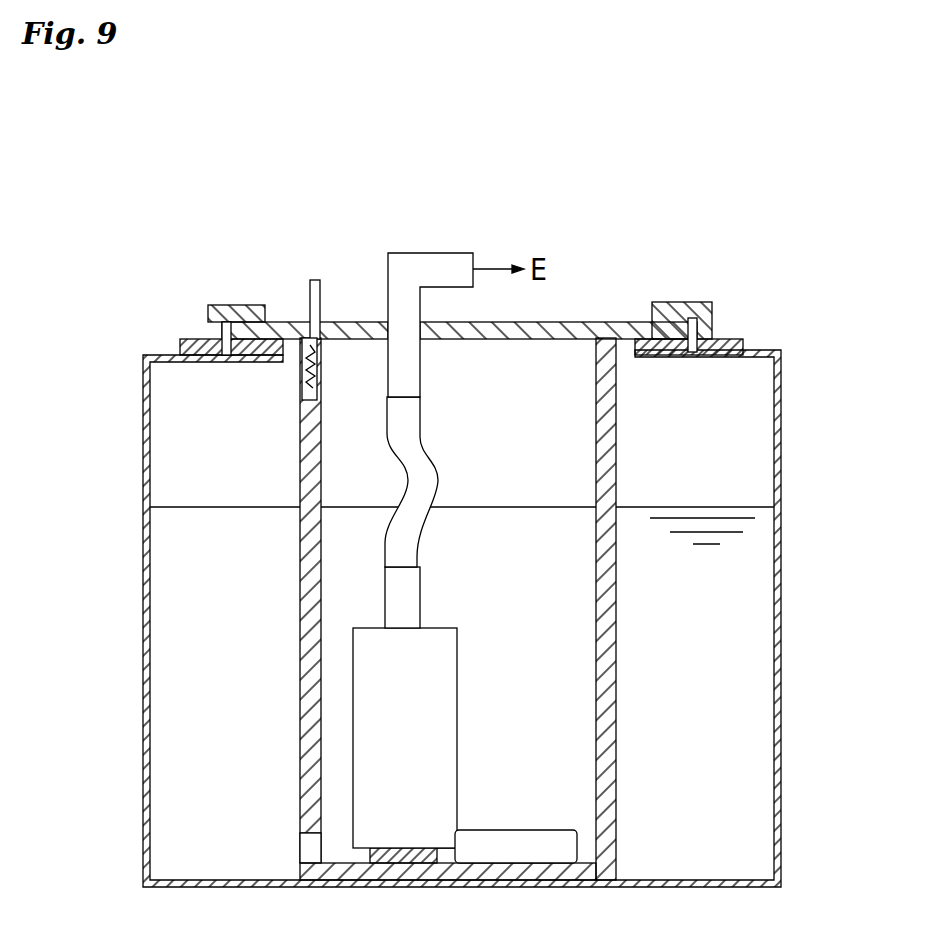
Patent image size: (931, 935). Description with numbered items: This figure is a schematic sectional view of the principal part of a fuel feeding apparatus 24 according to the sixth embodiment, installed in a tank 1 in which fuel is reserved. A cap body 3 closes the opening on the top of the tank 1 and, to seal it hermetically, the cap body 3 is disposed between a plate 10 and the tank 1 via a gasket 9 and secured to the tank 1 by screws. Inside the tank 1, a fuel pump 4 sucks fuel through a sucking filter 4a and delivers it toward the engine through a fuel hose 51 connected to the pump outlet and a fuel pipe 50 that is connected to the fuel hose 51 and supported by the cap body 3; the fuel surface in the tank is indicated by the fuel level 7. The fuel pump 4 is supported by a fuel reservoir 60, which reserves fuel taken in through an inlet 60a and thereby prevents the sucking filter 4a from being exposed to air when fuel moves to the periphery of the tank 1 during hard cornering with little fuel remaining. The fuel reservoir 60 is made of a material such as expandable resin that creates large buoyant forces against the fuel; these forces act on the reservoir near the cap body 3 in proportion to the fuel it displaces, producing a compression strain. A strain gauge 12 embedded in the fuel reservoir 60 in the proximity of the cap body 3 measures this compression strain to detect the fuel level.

The tank 1 is at (786, 392).
The cap body 3 is at (587, 322).
The fuel pump 4 is at (457, 718).
The sucking filter 4a is at (520, 830).
The fuel level 7 is at (740, 505).
The gasket 9 is at (680, 335).
The plate 10 is at (725, 339).
The strain gauge 12 is at (302, 368).
The fuel feeding apparatus 24 is at (504, 258).
The fuel pipe 50 is at (420, 372).
The fuel hose 51 is at (438, 475).
The fuel reservoir 60 is at (616, 665).
The inlet 60a is at (305, 850).